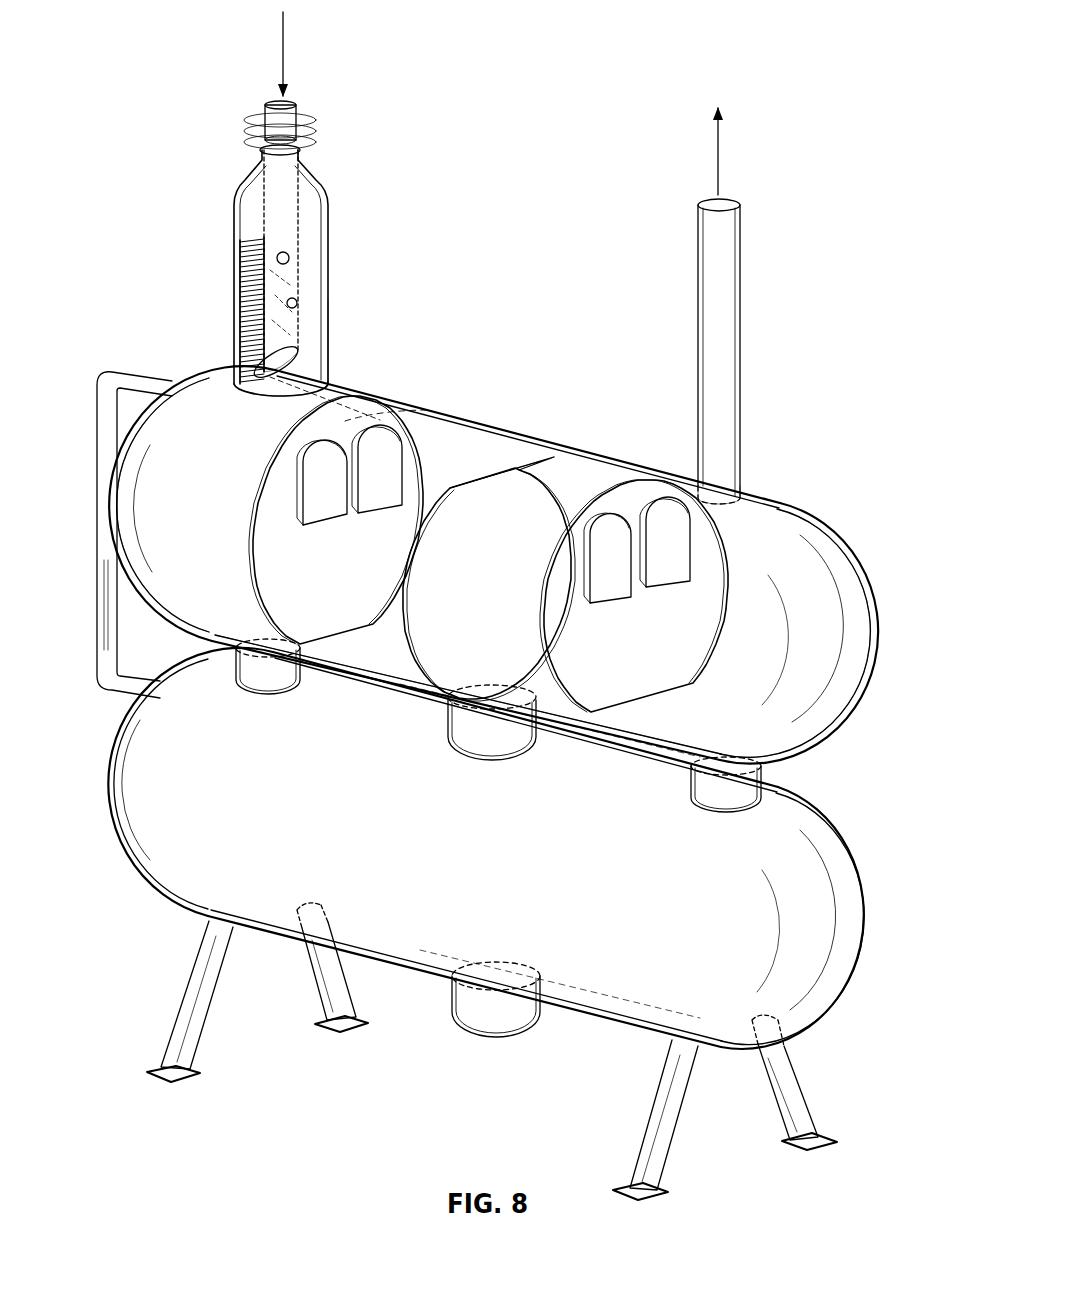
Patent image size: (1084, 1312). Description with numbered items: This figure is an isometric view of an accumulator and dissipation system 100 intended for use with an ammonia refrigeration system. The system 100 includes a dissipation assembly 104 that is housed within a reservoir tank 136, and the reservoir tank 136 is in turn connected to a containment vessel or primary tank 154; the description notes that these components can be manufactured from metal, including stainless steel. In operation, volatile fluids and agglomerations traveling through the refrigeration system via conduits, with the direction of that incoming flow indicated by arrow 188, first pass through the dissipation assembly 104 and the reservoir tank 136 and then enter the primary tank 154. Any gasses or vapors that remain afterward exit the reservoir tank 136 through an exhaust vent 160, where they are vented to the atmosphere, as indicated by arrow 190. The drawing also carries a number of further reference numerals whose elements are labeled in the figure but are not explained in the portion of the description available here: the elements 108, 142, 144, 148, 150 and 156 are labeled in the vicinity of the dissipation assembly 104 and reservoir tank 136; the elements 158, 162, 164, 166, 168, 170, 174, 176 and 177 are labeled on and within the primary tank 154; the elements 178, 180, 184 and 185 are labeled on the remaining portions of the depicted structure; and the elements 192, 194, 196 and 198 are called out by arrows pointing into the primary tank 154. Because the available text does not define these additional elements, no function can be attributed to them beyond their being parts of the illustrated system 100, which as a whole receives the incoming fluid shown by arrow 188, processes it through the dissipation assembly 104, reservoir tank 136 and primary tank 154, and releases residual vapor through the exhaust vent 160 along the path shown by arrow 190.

The accumulator and dissipation system 100 is at (500, 603).
The dissipation assembly 104 is at (300, 285).
The inner tube 108 is at (278, 180).
The reservoir tank 136 is at (384, 202).
The inlet port 142 is at (352, 378).
The bottle wall 144 is at (330, 286).
The spring 148 is at (240, 290).
The inlet opening 150 is at (248, 386).
The primary tank 154 is at (523, 565).
The tube outlet 156 is at (262, 413).
The outlet port 158 is at (716, 502).
The exhaust vent 160 is at (738, 206).
The tank top wall 162 is at (443, 413).
The end cap 164 is at (832, 612).
The first baffle 166 is at (268, 538).
The second baffle 168 is at (544, 488).
The third baffle 170 is at (710, 625).
The connector stub 174 is at (494, 779).
The baffle openings 176 is at (362, 506).
The baffle edge 177 is at (345, 421).
The lower tank 178 is at (852, 818).
The connecting conduit 180 is at (271, 687).
The handle bracket 184 is at (106, 403).
The legs 185 is at (195, 1012).
The arrow 188 is at (283, 53).
The arrow 190 is at (718, 134).
The first chamber 192 is at (138, 497).
The interior region 194 is at (371, 650).
The middle chamber 196 is at (497, 490).
The last chamber 198 is at (832, 660).